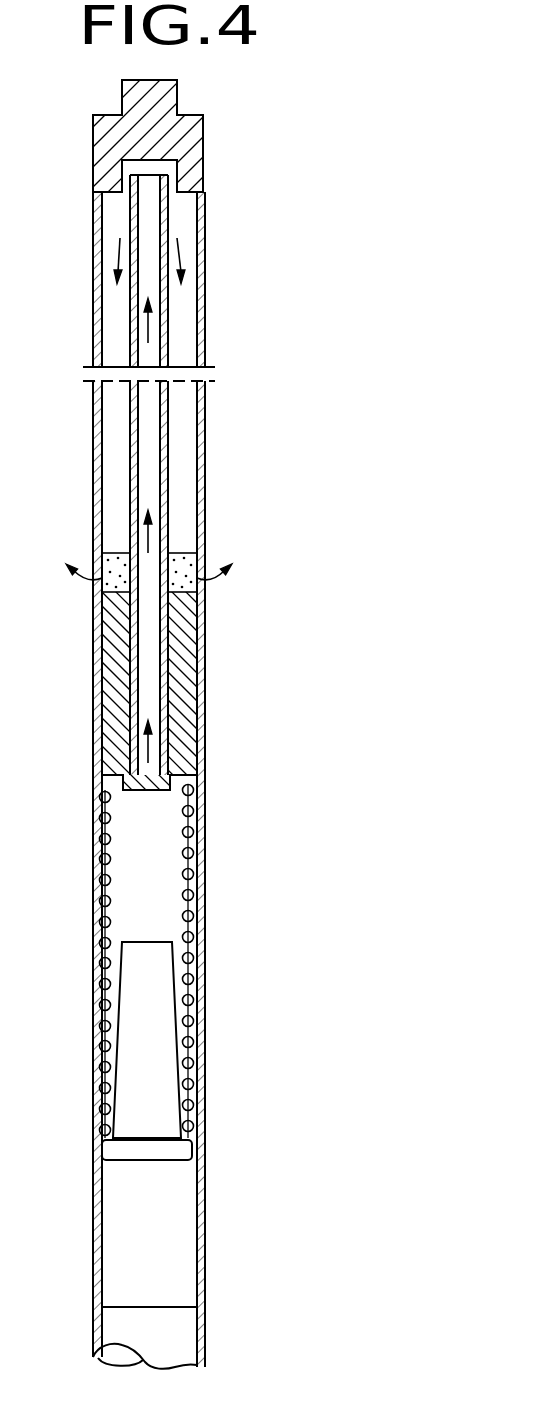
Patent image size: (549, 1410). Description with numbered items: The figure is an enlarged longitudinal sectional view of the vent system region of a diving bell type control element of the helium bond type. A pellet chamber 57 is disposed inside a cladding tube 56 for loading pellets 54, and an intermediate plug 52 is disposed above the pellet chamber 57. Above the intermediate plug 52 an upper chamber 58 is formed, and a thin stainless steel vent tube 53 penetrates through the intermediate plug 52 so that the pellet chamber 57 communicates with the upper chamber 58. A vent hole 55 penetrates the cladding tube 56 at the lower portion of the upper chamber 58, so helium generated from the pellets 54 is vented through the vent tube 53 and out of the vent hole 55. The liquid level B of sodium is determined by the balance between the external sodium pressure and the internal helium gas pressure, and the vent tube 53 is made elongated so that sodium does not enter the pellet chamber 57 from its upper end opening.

The intermediate plug 52 is at (188, 690).
The vent tube 53 is at (167, 465).
The pellets 54 is at (185, 1202).
The vent hole 55 is at (187, 580).
The cladding tube 56 is at (205, 840).
The pellet chamber 57 is at (150, 868).
The upper chamber 58 is at (190, 308).
The liquid level of sodium B is at (183, 553).